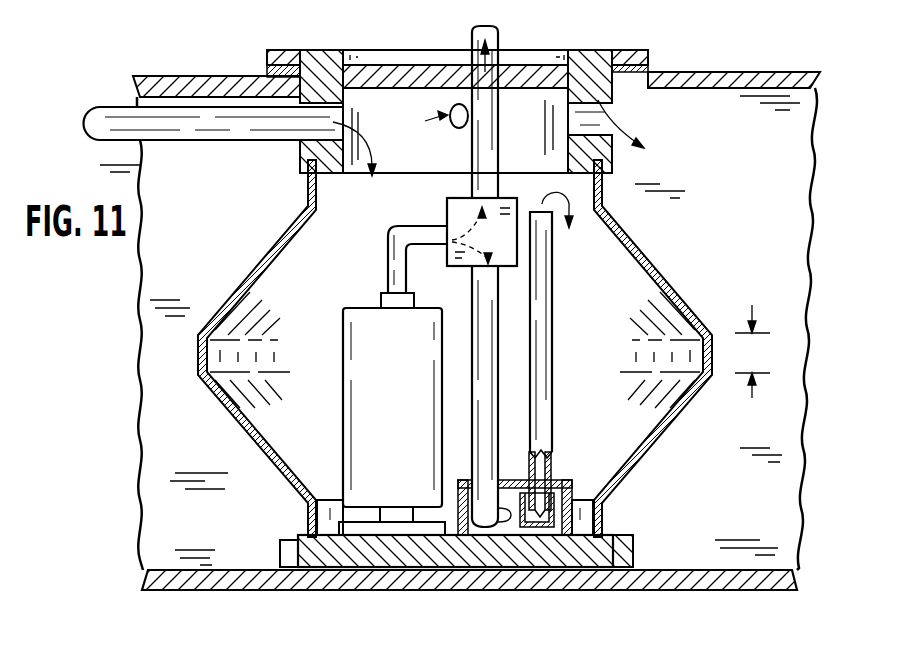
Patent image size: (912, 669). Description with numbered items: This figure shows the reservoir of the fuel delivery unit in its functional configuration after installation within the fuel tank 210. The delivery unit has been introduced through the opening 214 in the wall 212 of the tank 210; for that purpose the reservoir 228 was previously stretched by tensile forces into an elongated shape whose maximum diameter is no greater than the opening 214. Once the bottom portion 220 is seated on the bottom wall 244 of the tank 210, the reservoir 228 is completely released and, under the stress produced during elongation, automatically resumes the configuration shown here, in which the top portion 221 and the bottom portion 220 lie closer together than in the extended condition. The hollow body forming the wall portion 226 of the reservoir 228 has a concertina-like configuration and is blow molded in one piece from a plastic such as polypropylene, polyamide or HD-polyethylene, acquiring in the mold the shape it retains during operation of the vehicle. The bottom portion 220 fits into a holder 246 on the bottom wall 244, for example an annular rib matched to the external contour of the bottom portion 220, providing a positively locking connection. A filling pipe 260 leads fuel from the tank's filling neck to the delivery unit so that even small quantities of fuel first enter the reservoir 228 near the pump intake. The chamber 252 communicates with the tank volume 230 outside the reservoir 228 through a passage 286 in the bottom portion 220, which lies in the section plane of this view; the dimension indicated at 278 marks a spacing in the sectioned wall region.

The fuel tank 210 is at (775, 60).
The wall 212 is at (703, 78).
The opening 214 is at (607, 108).
The bottom portion 220 is at (363, 557).
The top portion 221 is at (588, 62).
The wall portion 226 is at (676, 282).
The reservoir 228 is at (616, 287).
The tank volume 230 is at (746, 231).
The bottom wall 244 is at (723, 577).
The holder 246 is at (637, 548).
The chamber 252 is at (478, 528).
The filling pipe 260 is at (227, 127).
The liquid level gap 278 is at (757, 351).
The passage 286 is at (557, 557).